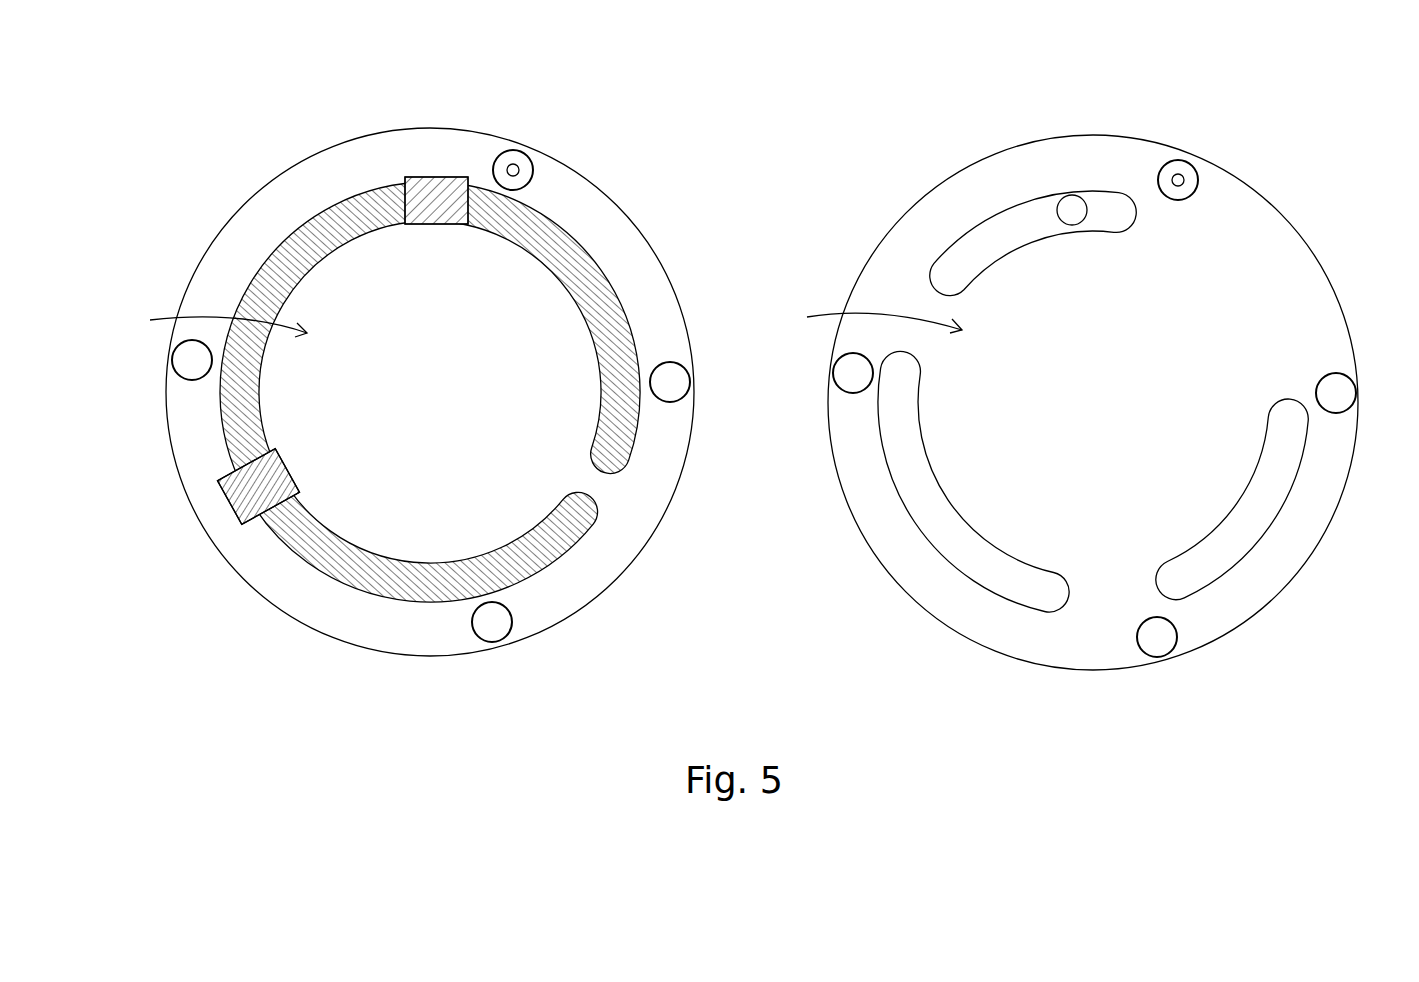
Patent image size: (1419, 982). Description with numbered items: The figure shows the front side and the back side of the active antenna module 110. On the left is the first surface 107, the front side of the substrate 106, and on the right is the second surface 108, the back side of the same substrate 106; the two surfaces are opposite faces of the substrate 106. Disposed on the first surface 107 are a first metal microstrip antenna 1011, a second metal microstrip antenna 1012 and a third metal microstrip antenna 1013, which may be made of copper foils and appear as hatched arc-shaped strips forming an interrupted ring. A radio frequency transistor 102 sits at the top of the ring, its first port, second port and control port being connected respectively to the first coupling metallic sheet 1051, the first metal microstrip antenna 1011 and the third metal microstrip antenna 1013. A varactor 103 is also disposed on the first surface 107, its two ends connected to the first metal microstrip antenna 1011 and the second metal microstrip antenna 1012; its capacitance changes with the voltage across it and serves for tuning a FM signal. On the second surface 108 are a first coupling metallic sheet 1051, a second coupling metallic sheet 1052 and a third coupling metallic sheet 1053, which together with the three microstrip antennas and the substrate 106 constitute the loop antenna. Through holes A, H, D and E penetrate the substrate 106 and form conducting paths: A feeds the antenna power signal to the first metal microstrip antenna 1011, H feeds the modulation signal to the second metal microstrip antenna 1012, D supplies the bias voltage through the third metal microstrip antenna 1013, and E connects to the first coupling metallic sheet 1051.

The active antenna module 110 is at (759, 67).
The radio frequency transistor 102 is at (433, 177).
The varactor 103 is at (233, 502).
The substrate 106 is at (648, 485).
The first surface 107 is at (202, 320).
The second surface 108 is at (860, 316).
The first metal microstrip antenna 1011 is at (270, 290).
The second metal microstrip antenna 1012 is at (450, 593).
The third metal microstrip antenna 1013 is at (577, 270).
The first coupling metallic sheet 1051 is at (985, 243).
The second coupling metallic sheet 1052 is at (922, 495).
The third coupling metallic sheet 1053 is at (1258, 500).